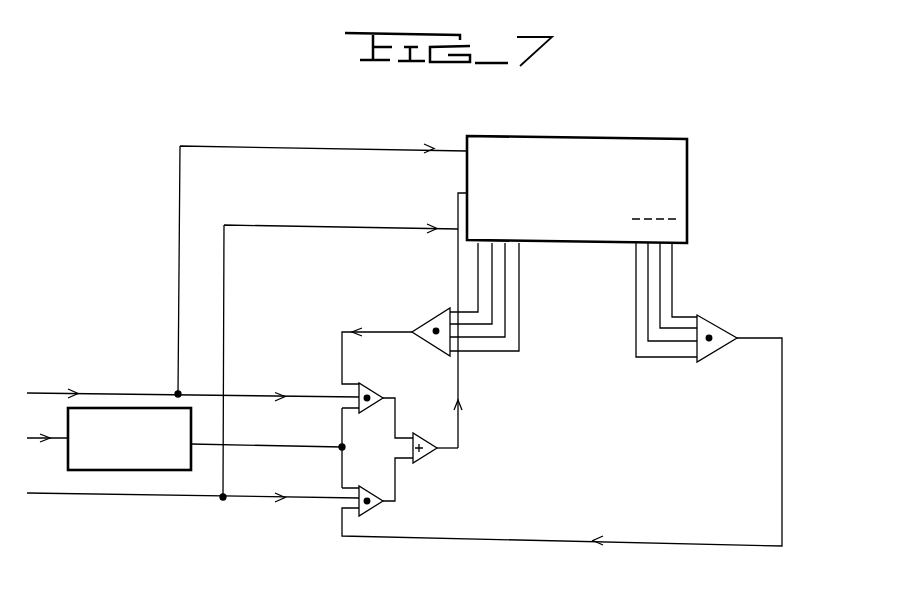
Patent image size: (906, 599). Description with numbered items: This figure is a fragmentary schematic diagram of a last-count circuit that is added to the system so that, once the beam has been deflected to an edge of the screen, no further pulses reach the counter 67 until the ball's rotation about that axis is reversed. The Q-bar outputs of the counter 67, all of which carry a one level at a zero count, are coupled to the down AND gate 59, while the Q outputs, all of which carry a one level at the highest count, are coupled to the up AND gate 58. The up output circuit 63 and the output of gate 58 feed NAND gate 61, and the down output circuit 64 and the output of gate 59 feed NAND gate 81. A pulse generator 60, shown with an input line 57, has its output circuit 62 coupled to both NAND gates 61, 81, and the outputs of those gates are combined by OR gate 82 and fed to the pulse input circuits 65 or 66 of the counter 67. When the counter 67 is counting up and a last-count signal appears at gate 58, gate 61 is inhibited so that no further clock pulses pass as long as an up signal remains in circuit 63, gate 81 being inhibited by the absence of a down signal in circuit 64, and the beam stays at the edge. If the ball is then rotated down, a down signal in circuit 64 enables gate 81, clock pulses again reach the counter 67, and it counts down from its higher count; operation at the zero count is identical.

The counter 67 is at (662, 182).
The pulse input circuit 65 is at (322, 320).
The pulse input circuit 66 is at (458, 200).
The "up" AND gate 58 is at (422, 323).
The "down" AND gate 59 is at (722, 327).
The NAND gate 61 is at (372, 383).
The NAND gate 81 is at (378, 510).
The OR gate 82 is at (426, 459).
The pulse generator 60 is at (131, 408).
The output circuit 62 is at (211, 444).
The "up" output circuit 63 is at (57, 392).
The pulse generator input 57 is at (42, 432).
The "down" output circuit 64 is at (30, 492).